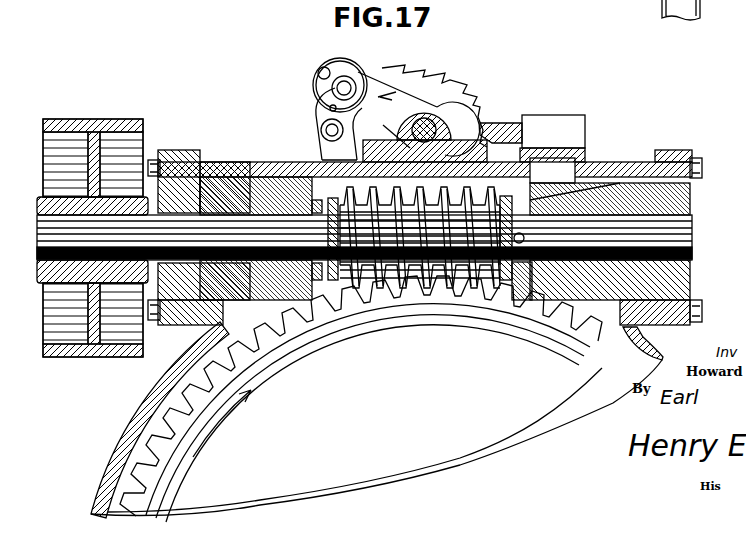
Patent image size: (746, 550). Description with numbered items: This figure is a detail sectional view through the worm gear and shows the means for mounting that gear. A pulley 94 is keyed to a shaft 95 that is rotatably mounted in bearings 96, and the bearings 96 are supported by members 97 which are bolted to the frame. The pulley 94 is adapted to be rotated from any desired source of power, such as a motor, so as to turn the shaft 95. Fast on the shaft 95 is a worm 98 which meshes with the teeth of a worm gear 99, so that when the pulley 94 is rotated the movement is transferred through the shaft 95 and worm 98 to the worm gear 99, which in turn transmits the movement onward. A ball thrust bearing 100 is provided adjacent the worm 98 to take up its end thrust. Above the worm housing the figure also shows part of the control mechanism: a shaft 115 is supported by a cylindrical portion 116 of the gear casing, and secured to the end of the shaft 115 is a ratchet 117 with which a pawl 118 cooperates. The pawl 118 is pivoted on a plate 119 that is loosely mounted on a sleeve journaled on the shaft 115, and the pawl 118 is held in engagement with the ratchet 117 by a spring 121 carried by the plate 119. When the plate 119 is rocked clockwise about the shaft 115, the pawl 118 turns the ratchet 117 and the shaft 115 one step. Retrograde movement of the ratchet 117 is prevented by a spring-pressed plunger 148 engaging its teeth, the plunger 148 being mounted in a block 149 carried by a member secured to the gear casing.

The pulley 94 is at (97, 120).
The shaft 95 is at (673, 237).
The bearings 96 is at (208, 215).
The members 97 is at (200, 190).
The worm 98 is at (423, 280).
The worm gear 99 is at (228, 327).
The ball thrust bearing 100 is at (332, 278).
The shaft 115 is at (400, 121).
The cylindrical portion 116 is at (460, 147).
The ratchet 117 is at (440, 83).
The pawl 118 is at (378, 70).
The plate 119 is at (382, 97).
The spring 121 is at (335, 60).
The spring-pressed plunger 148 is at (500, 130).
The block 149 is at (537, 128).